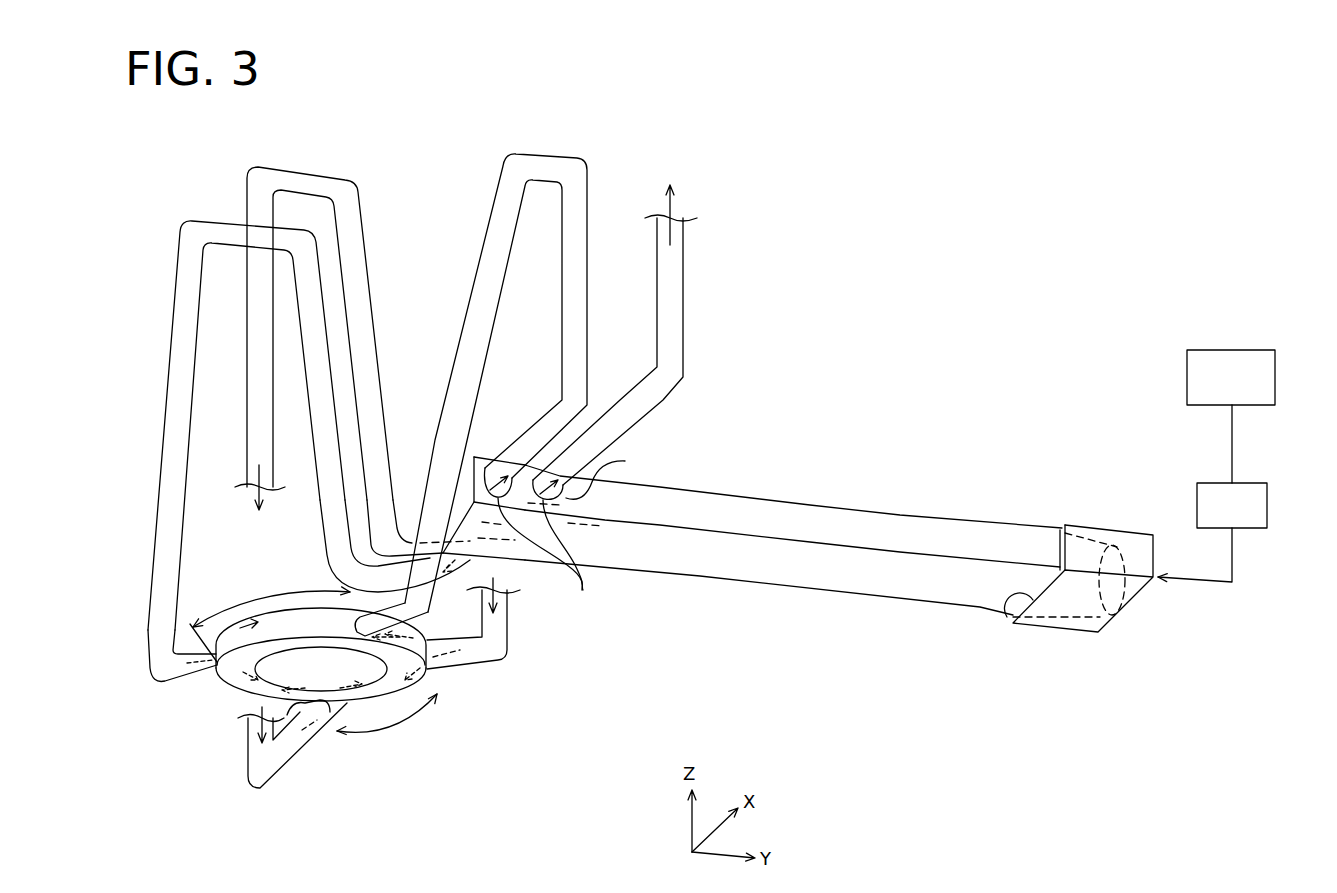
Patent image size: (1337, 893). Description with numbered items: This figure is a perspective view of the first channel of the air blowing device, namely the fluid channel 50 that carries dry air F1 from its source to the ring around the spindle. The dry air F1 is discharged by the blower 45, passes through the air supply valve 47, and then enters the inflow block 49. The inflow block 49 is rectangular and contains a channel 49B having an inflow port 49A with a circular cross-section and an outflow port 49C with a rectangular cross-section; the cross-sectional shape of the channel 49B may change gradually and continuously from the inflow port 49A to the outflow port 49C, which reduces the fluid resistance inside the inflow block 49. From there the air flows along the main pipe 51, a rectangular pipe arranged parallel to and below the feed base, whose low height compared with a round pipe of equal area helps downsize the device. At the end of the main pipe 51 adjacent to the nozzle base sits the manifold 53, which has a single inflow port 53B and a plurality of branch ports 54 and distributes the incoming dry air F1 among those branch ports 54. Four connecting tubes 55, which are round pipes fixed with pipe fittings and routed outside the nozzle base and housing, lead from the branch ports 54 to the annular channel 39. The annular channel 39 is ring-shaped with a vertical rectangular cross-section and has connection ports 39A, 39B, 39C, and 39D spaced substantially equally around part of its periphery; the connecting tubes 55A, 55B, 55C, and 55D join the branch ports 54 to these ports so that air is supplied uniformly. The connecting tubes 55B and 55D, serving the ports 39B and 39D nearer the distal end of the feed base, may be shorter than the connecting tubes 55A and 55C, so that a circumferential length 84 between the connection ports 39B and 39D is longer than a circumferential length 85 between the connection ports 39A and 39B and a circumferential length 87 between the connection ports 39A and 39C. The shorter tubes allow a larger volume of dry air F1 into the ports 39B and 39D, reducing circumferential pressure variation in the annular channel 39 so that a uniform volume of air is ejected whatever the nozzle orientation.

The annular channel 39 is at (330, 702).
The connection port 39A is at (437, 677).
The connection port 39B is at (348, 637).
The connection port 39C is at (310, 747).
The connection port 39D is at (202, 692).
The blower 45 is at (1253, 350).
The air supply valve 47 is at (1253, 483).
The inflow block 49 is at (1067, 632).
The inflow port 49A is at (1120, 600).
The channel 49B is at (1058, 633).
The outflow port 49C is at (1009, 639).
The fluid channel 50 is at (801, 574).
The main pipe 51 is at (903, 517).
The manifold 53 is at (523, 573).
The inflow port 53B is at (613, 475).
The branch ports 54 is at (545, 556).
The connecting tubes 55 is at (454, 495).
The connecting tube 55A is at (684, 286).
The connecting tube 55B is at (500, 178).
The connecting tube 55C is at (362, 246).
The connecting tube 55D is at (212, 222).
The circumferential length 84 is at (252, 598).
The circumferential length 85 is at (453, 620).
The circumferential length 87 is at (390, 727).
The dry air F1 is at (1195, 571).